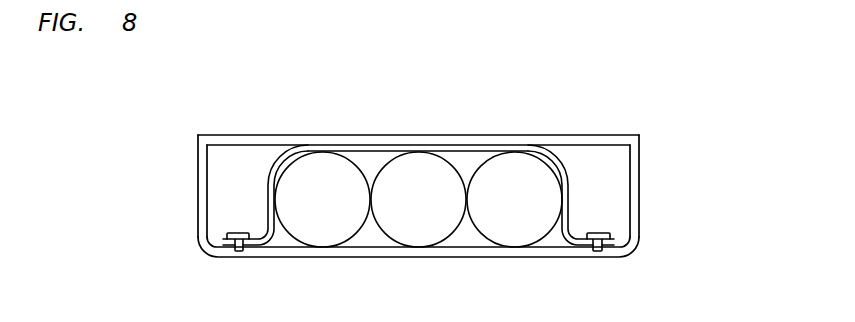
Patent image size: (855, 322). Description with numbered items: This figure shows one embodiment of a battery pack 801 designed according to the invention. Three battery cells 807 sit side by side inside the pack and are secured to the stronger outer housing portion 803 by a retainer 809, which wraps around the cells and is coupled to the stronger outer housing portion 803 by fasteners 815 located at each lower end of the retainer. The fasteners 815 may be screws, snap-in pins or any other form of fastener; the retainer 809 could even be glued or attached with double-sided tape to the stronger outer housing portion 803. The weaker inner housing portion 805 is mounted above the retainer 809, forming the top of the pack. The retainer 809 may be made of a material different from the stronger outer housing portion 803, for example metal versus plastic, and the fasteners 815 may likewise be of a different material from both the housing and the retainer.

The battery pack 801 is at (92, 162).
The stronger outer housing portion 803 is at (307, 256).
The weaker inner housing portion 805 is at (250, 135).
The battery cells 807 is at (512, 167).
The retainer 809 is at (573, 187).
The fasteners 815 is at (228, 240).